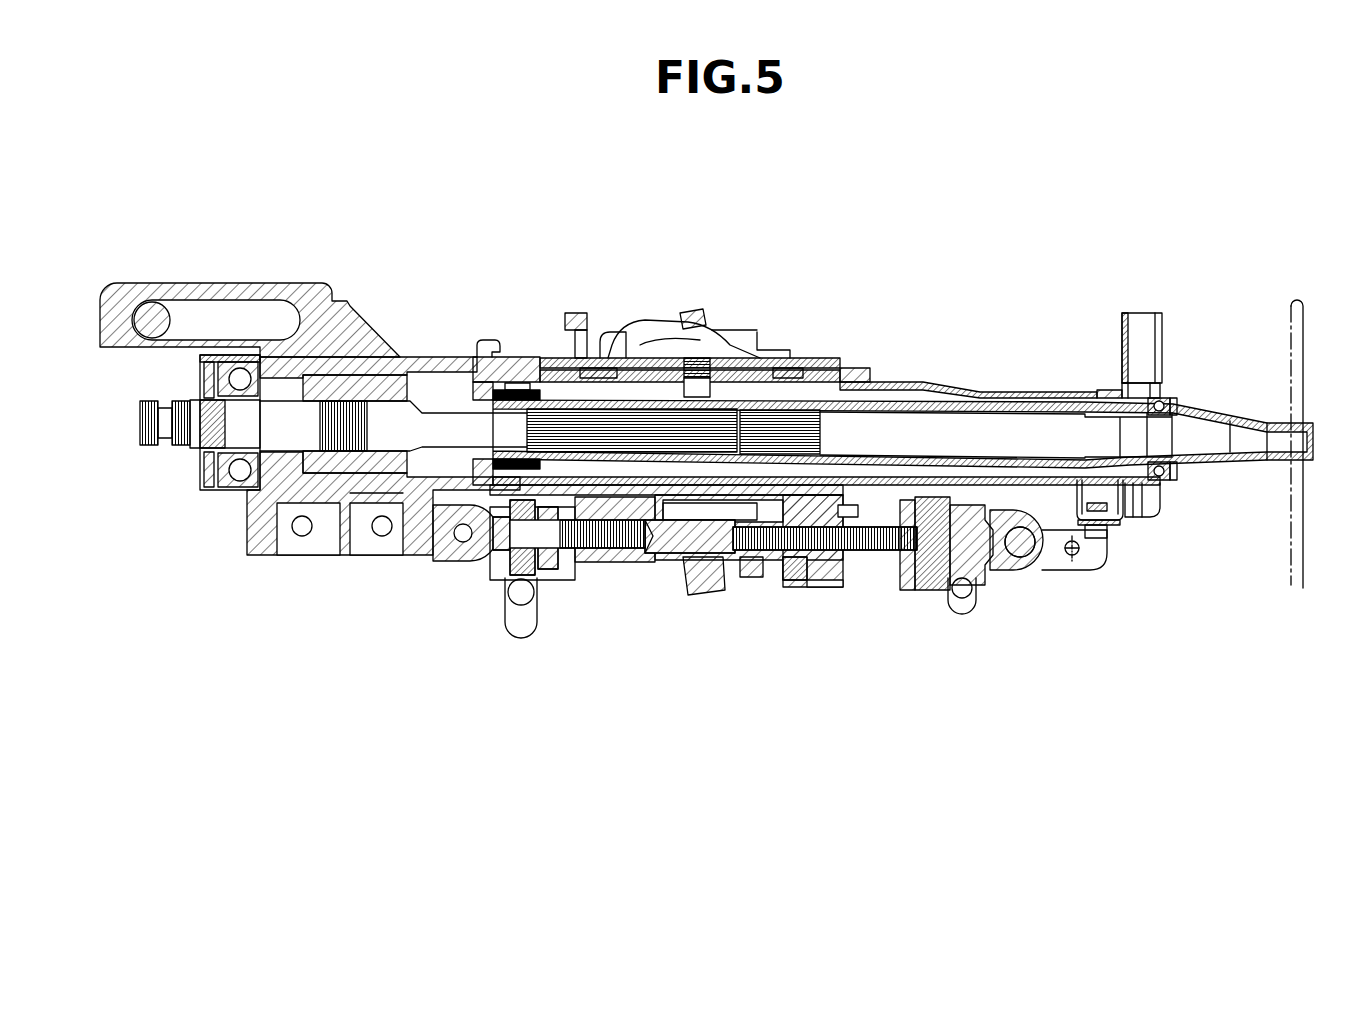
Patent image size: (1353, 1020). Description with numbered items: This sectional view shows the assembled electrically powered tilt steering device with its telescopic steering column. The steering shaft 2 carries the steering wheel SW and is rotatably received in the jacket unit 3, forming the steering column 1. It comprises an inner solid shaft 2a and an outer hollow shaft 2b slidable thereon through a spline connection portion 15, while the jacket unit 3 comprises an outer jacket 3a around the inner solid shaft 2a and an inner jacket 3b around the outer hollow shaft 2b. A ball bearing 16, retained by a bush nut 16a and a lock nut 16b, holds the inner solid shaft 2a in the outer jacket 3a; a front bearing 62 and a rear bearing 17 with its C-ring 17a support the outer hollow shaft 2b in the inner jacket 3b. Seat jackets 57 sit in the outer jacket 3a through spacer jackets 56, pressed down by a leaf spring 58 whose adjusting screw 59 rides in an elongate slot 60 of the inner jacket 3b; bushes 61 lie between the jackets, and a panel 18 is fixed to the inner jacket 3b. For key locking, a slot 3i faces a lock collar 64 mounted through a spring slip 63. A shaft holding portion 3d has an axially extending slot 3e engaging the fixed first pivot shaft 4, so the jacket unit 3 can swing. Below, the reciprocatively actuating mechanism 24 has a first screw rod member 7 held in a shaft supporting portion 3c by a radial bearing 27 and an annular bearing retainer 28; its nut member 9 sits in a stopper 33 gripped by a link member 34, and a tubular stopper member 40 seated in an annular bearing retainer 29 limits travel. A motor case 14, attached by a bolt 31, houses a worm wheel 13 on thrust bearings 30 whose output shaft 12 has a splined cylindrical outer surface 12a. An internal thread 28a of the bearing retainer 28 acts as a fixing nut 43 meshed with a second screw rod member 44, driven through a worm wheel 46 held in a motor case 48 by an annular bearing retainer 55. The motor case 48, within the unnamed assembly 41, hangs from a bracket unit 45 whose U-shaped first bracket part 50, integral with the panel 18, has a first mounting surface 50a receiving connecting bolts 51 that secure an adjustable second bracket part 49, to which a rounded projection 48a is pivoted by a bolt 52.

The steering column apparatus 1 is at (875, 172).
The steering shaft 2 is at (393, 208).
The lower shaft 2a is at (450, 423).
The upper shaft 2b is at (493, 396).
The column 3 is at (810, 215).
The outer column 3a is at (858, 384).
The inner column 3b is at (905, 381).
The column lower portion 3c is at (835, 588).
The column bracket 3d is at (127, 290).
The elongated hole 3e is at (208, 315).
The column support portion 3i is at (378, 494).
The pivot pin 4 is at (152, 318).
The bracket plate 7 is at (641, 565).
The telescopic housing 9 is at (693, 568).
The tilt bolt 12 is at (535, 582).
The threaded portion 12a is at (585, 582).
The nut 13 is at (523, 580).
The tilt bracket 14 is at (477, 558).
The intermediate shaft 15 is at (570, 412).
The bearing 16 is at (213, 500).
The bearing outer race 16a is at (205, 360).
The shaft end portion 16b is at (185, 400).
The upper bearing 17 is at (1165, 397).
The bearing retainer 17a is at (1177, 412).
The upper bracket 18 is at (1122, 342).
The tilt mechanism 24 is at (672, 620).
The nut 27 is at (795, 588).
The feed nut 28 is at (815, 590).
The nut projection 28a is at (840, 535).
The washer 29 is at (547, 582).
The operating lever 30 is at (505, 582).
The pivot pin 31 is at (458, 545).
The stopper 33 is at (747, 582).
The spring 34 is at (720, 598).
The slider block 40 is at (600, 560).
The telescopic mechanism 41 is at (940, 637).
The nut member 43 is at (834, 586).
The feed screw 44 is at (873, 552).
The bracket assembly 45 is at (1105, 655).
The operating lever 46 is at (967, 603).
The cam 48 is at (932, 593).
The cam follower 48a is at (1000, 565).
The lower bracket 49 is at (1087, 562).
The upper bracket 50 is at (1078, 505).
The bracket flange 50a is at (1128, 527).
The screw 51 is at (1100, 540).
The pivot pin 52 is at (1022, 535).
The plate 55 is at (907, 597).
The bearing bushing 56 is at (585, 356).
The bracket 57 is at (613, 343).
The plate 58 is at (640, 323).
The block 59 is at (684, 312).
The screw 60 is at (712, 360).
The bushing 61 is at (520, 375).
The flange 62 is at (523, 380).
The spline 63 is at (345, 405).
The bushing 64 is at (380, 380).
The steering wheel SW is at (1288, 310).